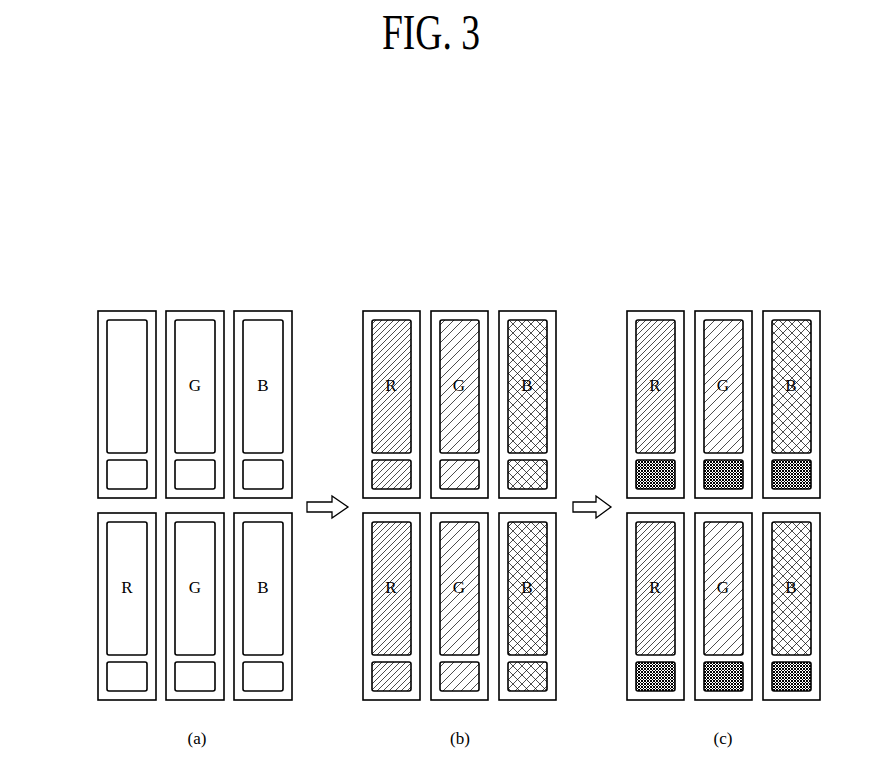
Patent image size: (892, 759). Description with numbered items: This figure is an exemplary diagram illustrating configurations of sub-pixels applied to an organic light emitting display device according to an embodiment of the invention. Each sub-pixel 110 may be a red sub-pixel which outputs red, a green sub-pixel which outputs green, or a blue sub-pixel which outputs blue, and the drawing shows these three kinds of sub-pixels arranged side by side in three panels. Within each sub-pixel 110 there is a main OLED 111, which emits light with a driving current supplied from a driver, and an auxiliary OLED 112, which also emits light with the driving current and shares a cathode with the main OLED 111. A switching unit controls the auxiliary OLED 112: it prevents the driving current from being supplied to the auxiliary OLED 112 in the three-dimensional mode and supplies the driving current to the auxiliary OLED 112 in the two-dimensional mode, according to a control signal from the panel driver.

The sub-pixel 110 is at (138, 310).
The main OLED 111 is at (107, 374).
The auxiliary OLED 112 is at (107, 470).